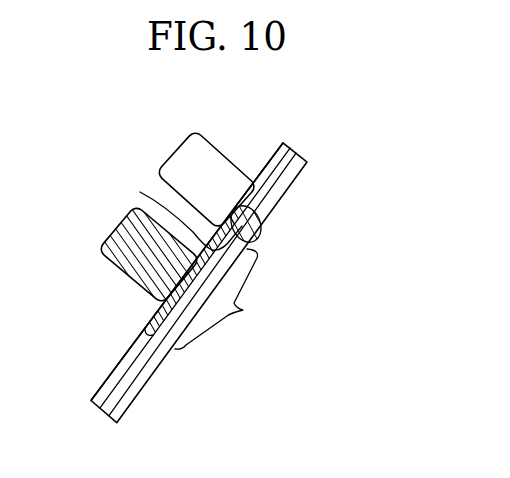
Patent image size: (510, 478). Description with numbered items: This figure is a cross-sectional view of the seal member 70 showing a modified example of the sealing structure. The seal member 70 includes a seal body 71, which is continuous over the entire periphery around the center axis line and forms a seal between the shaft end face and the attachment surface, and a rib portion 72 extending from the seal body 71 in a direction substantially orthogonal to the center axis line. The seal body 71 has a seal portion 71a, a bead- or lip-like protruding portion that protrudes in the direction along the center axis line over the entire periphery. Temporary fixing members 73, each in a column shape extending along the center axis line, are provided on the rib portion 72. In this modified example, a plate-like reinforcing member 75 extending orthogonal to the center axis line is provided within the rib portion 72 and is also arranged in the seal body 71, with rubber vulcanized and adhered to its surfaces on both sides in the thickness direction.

The seal member 70 is at (138, 397).
The seal body 71 is at (258, 211).
The seal portion 71a is at (140, 192).
The rib portion 72 is at (199, 282).
The temporary fixing member 73 is at (173, 149).
The reinforcing member 75 is at (291, 148).